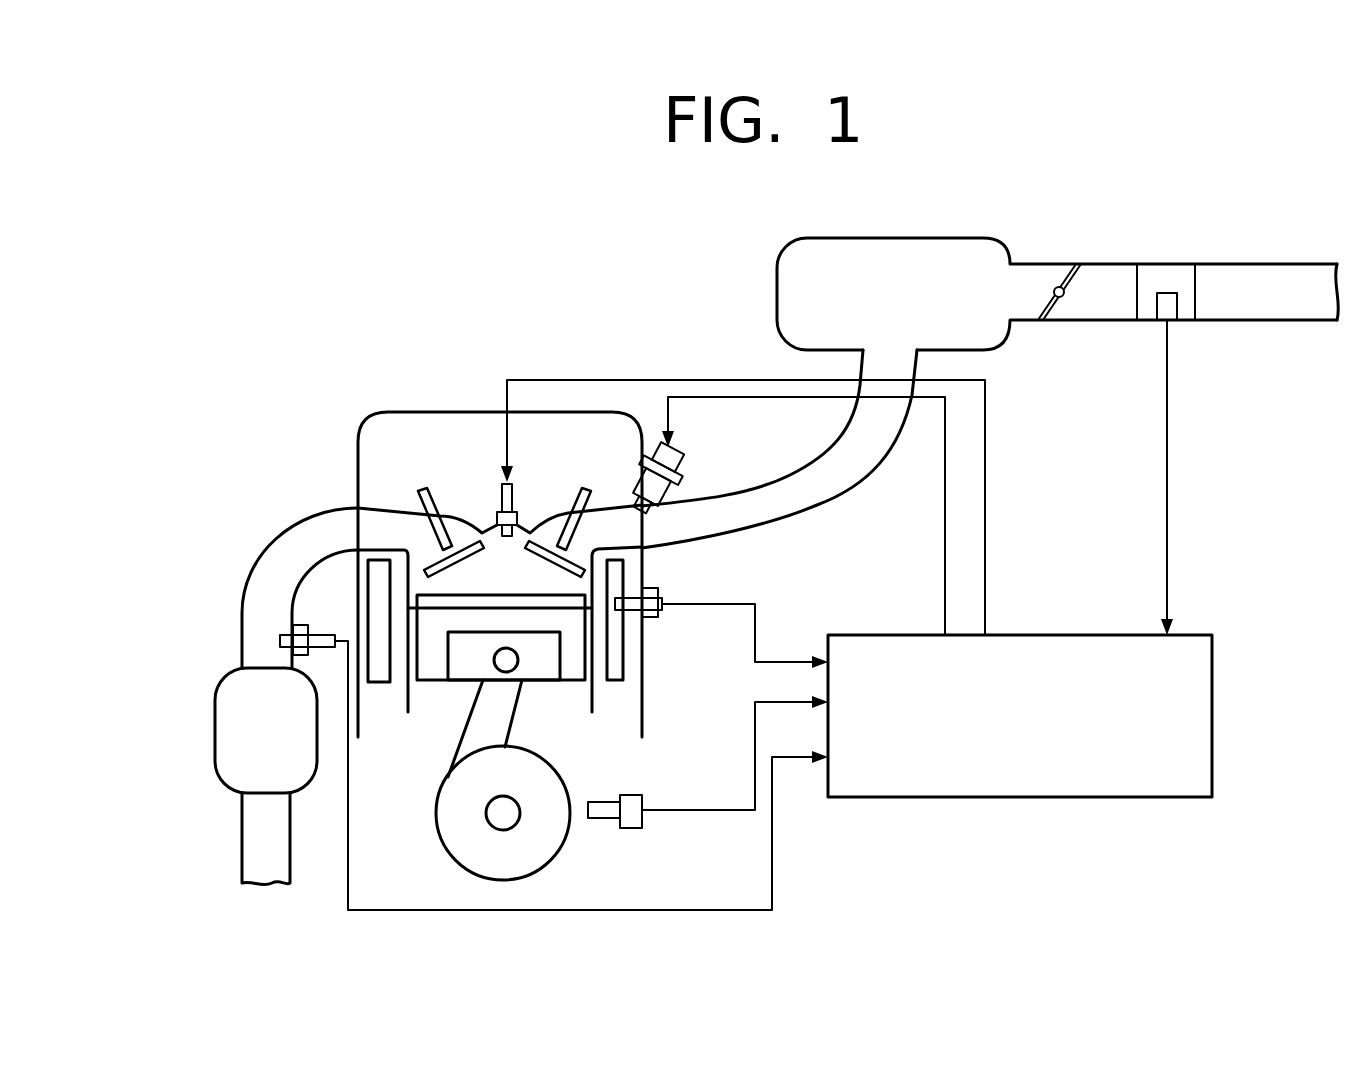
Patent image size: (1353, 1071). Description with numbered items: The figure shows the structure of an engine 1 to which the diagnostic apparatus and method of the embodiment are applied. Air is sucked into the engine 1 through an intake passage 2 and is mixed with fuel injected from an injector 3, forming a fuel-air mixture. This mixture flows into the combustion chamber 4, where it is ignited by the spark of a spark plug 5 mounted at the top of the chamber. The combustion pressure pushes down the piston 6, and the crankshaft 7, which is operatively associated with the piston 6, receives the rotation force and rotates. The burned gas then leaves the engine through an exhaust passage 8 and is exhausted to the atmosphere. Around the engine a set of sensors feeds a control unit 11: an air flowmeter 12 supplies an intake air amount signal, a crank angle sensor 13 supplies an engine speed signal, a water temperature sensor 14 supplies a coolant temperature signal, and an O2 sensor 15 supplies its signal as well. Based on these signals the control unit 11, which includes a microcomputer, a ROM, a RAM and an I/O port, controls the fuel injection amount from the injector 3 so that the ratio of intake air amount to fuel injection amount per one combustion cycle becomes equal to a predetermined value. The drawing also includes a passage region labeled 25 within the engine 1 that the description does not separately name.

The engine 1 is at (348, 424).
The intake passage 2 is at (822, 490).
The injector 3 is at (695, 460).
The combustion chamber 4 is at (495, 582).
The spark plug 5 is at (497, 497).
The piston 6 is at (436, 688).
The crankshaft 7 is at (448, 836).
The exhaust passage 8 is at (240, 648).
The control unit 11 is at (1104, 798).
The air flowmeter 12 is at (1170, 292).
The crank angle sensor 13 is at (630, 829).
The water temperature sensor 14 is at (662, 588).
The O2 sensor 15 is at (280, 633).
The water jacket 25 is at (617, 655).